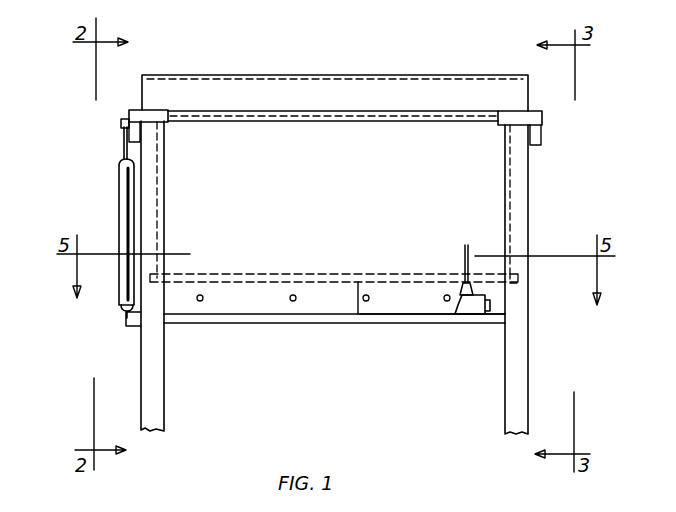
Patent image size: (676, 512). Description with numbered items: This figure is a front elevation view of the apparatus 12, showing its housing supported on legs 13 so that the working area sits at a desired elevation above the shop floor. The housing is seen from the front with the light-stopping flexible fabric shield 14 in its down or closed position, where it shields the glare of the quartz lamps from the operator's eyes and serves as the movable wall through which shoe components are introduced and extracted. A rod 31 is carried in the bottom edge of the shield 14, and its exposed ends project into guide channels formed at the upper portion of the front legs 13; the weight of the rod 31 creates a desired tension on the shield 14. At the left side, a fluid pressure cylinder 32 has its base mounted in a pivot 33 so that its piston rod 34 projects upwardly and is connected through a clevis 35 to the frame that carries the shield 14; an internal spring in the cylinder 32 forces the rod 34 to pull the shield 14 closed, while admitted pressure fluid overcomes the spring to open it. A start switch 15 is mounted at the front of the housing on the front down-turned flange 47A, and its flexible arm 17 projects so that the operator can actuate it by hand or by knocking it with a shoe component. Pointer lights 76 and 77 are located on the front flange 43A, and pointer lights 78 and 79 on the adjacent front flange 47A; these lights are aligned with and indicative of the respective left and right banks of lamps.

The apparatus 12 is at (357, 66).
The legs 13 is at (160, 410).
The shield 14 is at (347, 188).
The start switch 15 is at (472, 312).
The flexible arm 17 is at (463, 245).
The rod 31 is at (252, 272).
The fluid pressure cylinder 32 is at (120, 198).
The pivot 33 is at (124, 320).
The piston rod 34 is at (124, 143).
The clevis 35 is at (124, 119).
The front down turned flange 43A is at (258, 311).
The front down turned flange 47A is at (420, 311).
The pointer light 76 is at (199, 301).
The pointer light 77 is at (292, 301).
The pointer light 78 is at (365, 301).
The pointer light 79 is at (446, 301).